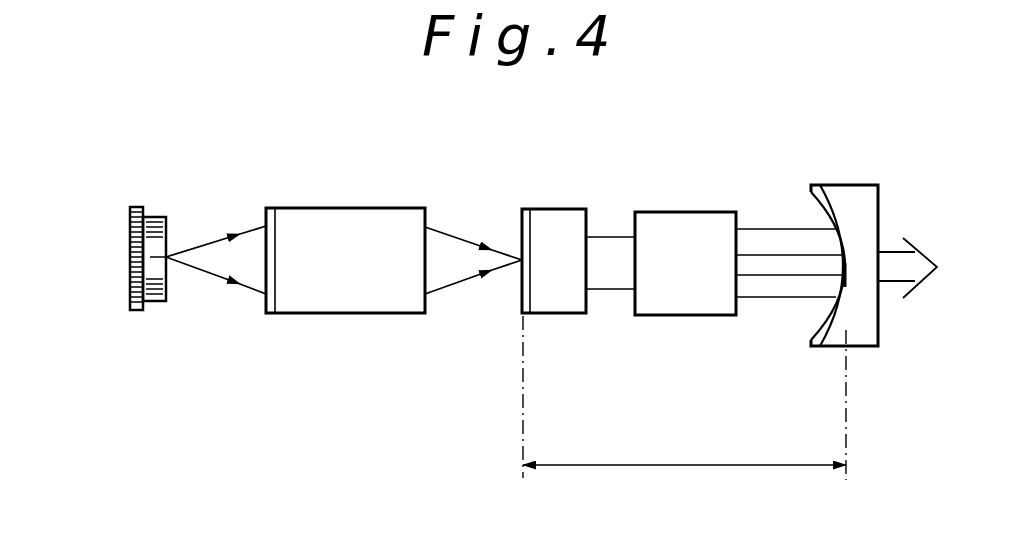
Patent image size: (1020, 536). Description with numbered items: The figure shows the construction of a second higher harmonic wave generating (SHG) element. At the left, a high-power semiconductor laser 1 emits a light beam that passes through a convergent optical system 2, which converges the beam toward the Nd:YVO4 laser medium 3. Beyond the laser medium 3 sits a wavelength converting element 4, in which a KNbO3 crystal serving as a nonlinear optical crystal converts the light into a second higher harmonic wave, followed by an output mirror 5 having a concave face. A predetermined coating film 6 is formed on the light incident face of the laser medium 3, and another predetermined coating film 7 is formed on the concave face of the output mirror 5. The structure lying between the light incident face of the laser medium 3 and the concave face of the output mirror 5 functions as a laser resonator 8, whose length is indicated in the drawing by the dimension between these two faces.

The semiconductor laser 1 is at (152, 214).
The convergent optical system 2 is at (378, 208).
The Nd:YVO4 laser medium 3 is at (560, 209).
The wavelength converting element 4 is at (712, 212).
The output mirror 5 is at (870, 185).
The coating film 6 is at (526, 316).
The coating film 7 is at (816, 343).
The laser resonator 8 is at (684, 398).